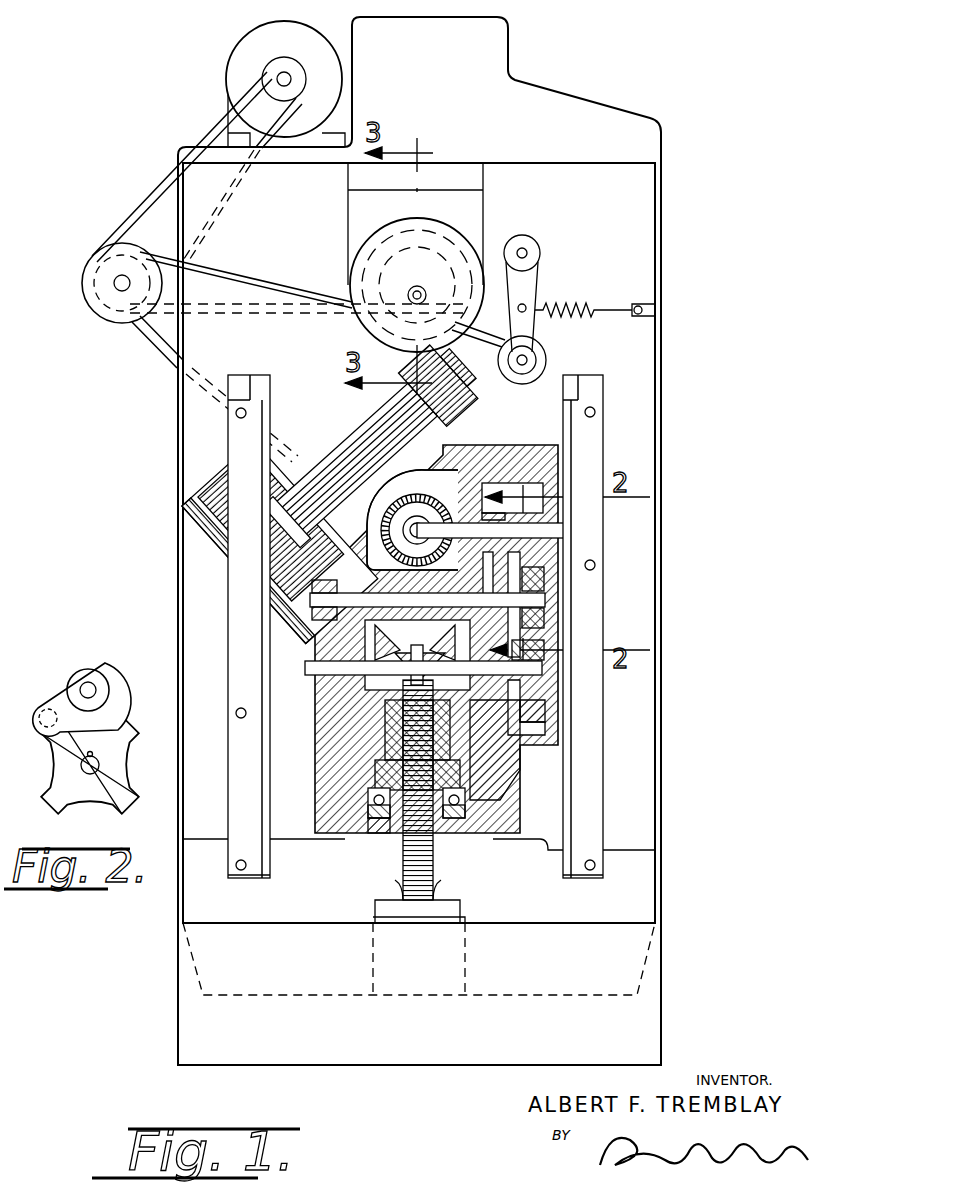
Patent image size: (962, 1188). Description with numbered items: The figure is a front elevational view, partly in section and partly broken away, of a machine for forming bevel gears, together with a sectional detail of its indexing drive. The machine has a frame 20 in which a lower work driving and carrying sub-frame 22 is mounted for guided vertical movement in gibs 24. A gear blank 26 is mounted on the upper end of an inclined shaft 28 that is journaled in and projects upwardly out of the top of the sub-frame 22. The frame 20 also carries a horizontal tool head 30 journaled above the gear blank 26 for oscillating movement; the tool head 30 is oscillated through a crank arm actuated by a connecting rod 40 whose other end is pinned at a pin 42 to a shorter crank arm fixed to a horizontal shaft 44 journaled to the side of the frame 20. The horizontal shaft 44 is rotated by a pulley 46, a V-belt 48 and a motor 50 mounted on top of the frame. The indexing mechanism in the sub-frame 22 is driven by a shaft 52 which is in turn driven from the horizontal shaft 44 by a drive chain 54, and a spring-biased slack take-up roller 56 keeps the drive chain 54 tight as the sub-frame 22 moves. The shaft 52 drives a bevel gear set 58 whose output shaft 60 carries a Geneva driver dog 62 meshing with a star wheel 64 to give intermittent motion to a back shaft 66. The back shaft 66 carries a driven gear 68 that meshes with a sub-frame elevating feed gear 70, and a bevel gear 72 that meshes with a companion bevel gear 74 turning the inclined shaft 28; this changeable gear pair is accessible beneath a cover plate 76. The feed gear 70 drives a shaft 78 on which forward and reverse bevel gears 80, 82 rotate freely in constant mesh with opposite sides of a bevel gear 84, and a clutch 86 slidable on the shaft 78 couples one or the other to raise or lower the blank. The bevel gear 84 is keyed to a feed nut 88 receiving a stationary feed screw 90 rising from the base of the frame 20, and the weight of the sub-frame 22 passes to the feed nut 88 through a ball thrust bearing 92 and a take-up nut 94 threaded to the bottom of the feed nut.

In FIG. 1, the frame 20 is at (680, 875).
In FIG. 1, the sub-frame 22 is at (546, 862).
In FIG. 1, the gibs 24 is at (262, 800).
In FIG. 1, the gear blank 26 is at (462, 402).
In FIG. 1, the inclined shaft 28 is at (350, 452).
In FIG. 1, the tool head 30 is at (455, 244).
In FIG. 1, the connecting rod 40 is at (302, 314).
In FIG. 1, the pin 42 is at (118, 330).
In FIG. 1, the horizontal shaft 44 is at (112, 288).
In FIG. 1, the pulley 46 is at (85, 268).
In FIG. 1, the V-belt 48 is at (155, 222).
In FIG. 1, the motor 50 is at (232, 66).
In FIG. 1, the shaft 52 is at (490, 440).
In FIG. 1, the drive chain 54 is at (175, 355).
In FIG. 1, the slack take-up roller 56 is at (548, 362).
In FIG. 1, the bevel gear set 58 is at (398, 512).
In FIG. 1, the output shaft 60 is at (568, 530).
In FIG. 2, the output shaft 60 is at (88, 686).
In FIG. 2, the Geneva driver dog 62 is at (52, 692).
In FIG. 1, the star wheel 64 is at (522, 568).
In FIG. 2, the star wheel 64 is at (128, 742).
In FIG. 1, the back shaft 66 is at (545, 596).
In FIG. 2, the back shaft 66 is at (80, 766).
In FIG. 1, the driven gear 68 is at (545, 622).
In FIG. 1, the sub-frame elevating feed gear 70 is at (545, 642).
In FIG. 1, the bevel gear 72 is at (322, 597).
In FIG. 1, the companion bevel gear 74 is at (242, 522).
In FIG. 1, the cover plate 76 is at (290, 560).
In FIG. 1, the shaft 78 is at (548, 680).
In FIG. 1, the forward bevel gear 80 is at (365, 697).
In FIG. 1, the reverse bevel gear 82 is at (470, 706).
In FIG. 1, the bevel gear 84 is at (388, 722).
In FIG. 1, the clutch 86 is at (435, 645).
In FIG. 1, the feed nut 88 is at (385, 770).
In FIG. 1, the feed screw 90 is at (436, 890).
In FIG. 1, the ball thrust bearing 92 is at (468, 802).
In FIG. 1, the take-up nut 94 is at (378, 830).